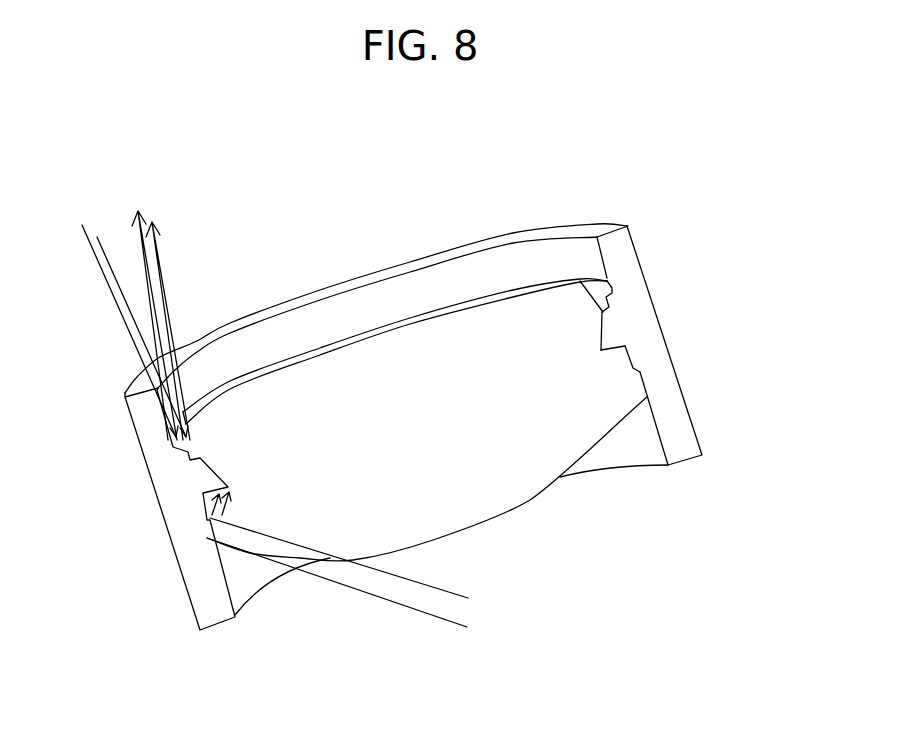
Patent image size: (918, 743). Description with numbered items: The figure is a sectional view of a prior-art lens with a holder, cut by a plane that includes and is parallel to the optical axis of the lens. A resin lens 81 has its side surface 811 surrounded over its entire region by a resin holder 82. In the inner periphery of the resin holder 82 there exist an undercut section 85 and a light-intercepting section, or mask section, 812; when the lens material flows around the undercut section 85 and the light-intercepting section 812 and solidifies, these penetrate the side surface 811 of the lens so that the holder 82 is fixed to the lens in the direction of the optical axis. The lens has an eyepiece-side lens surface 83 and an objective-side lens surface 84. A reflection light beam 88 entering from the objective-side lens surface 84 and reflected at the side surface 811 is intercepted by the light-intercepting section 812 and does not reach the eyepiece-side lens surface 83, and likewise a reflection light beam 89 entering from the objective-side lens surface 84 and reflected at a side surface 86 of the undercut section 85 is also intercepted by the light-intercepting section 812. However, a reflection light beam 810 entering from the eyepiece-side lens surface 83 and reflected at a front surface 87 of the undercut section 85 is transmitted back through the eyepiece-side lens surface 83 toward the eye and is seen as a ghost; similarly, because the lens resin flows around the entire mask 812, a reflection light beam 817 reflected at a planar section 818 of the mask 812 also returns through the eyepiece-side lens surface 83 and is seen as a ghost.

The resin lens 81 is at (471, 335).
The resin holder 82 is at (630, 270).
The eyepiece-side lens surface 83 is at (397, 318).
The objective-side lens surface 84 is at (522, 516).
The undercut section 85 is at (633, 353).
The side surface of the undercut section 86 is at (635, 362).
The front surface of the undercut section 87 is at (608, 236).
The reflection light beam 88 is at (390, 603).
The reflection light beam 89 is at (440, 588).
The reflection light beam 810 is at (142, 262).
The side surface of the resin lens 811 is at (643, 386).
The light-intercepting section (mask section) 812 is at (610, 337).
The reflection light beam 817 is at (168, 290).
The planar section of the mask 818 is at (583, 285).